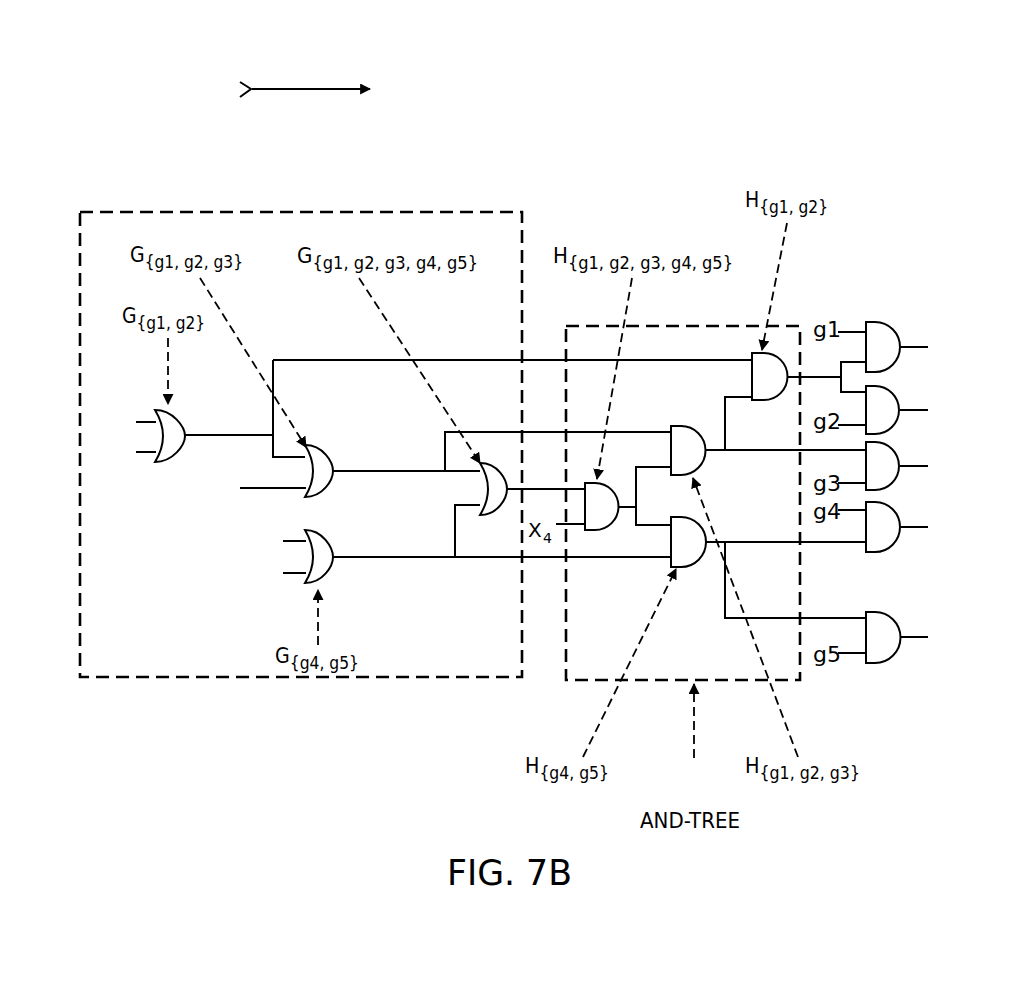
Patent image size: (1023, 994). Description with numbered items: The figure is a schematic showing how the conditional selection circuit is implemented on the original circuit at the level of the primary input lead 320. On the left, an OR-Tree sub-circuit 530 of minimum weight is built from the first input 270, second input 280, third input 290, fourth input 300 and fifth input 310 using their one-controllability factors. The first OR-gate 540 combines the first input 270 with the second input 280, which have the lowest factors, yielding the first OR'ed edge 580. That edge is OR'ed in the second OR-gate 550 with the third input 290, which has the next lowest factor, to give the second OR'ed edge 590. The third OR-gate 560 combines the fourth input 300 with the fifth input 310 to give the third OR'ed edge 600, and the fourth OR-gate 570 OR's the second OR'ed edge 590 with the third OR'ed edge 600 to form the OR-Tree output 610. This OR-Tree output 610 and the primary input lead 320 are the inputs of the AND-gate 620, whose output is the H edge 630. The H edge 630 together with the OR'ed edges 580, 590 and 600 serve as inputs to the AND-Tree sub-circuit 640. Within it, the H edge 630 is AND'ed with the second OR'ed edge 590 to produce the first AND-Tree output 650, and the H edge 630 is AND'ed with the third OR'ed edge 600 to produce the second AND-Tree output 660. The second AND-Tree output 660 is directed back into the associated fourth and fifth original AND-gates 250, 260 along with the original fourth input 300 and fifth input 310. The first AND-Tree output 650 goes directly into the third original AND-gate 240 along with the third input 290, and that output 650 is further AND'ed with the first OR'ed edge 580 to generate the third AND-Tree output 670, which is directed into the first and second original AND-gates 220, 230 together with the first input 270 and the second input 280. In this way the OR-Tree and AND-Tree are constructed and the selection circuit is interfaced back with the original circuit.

The AND-gate A1 220 is at (900, 361).
The AND-gate A2 230 is at (900, 422).
The AND-gate A3 240 is at (900, 480).
The AND-gate A4 250 is at (900, 543).
The AND-gate A5 260 is at (900, 655).
The input g1 270 is at (104, 418).
The input g2 280 is at (105, 460).
The input g3 290 is at (213, 490).
The input g4 300 is at (243, 545).
The input g5 310 is at (248, 578).
The primary input lead x4 320 is at (311, 88).
The OR-Tree sub-circuit 530 is at (187, 683).
The first OR-gate 540 is at (179, 412).
The OR-gate 550 is at (322, 447).
The OR-gate 560 is at (330, 544).
The OR-gate 570 is at (497, 509).
The g1 OR g2 edge 580 is at (272, 434).
The g1 OR g2 OR g3 edge 590 is at (398, 473).
The g4 OR g5 edge 600 is at (455, 558).
The OR-Tree output g1 OR g2 OR g3 OR g4 OR g5 610 is at (546, 487).
The AND-gate 620 is at (604, 531).
The H edge 630 is at (636, 500).
The AND-Tree sub-circuit 640 is at (652, 685).
The H123 output 650 is at (725, 446).
The H45 output 660 is at (724, 541).
The H12 output 670 is at (837, 369).